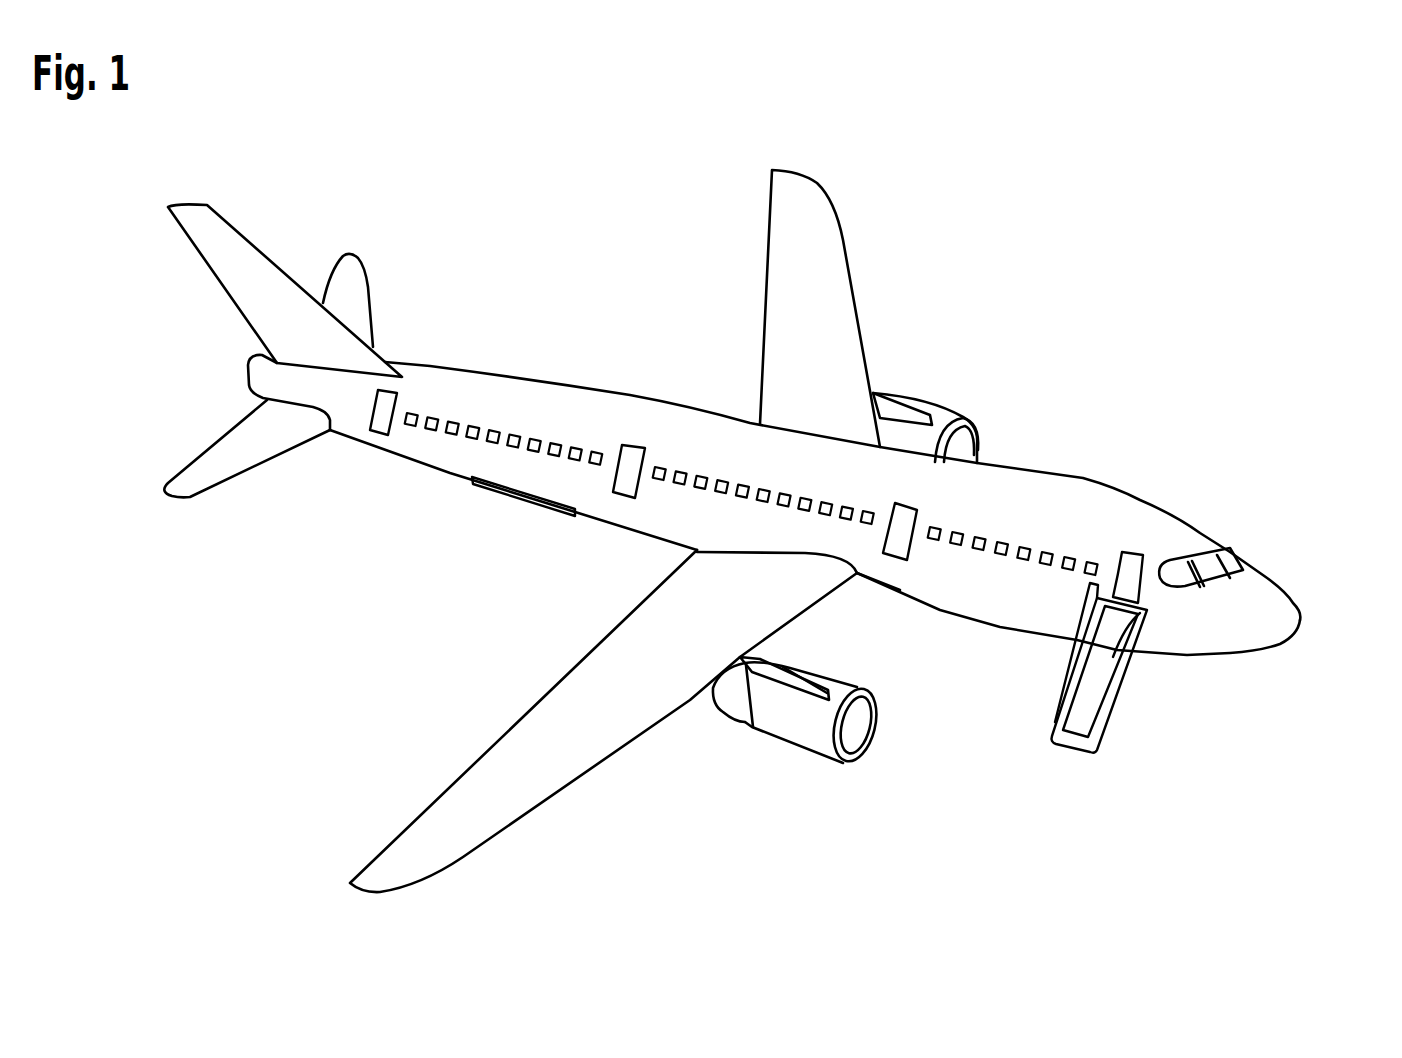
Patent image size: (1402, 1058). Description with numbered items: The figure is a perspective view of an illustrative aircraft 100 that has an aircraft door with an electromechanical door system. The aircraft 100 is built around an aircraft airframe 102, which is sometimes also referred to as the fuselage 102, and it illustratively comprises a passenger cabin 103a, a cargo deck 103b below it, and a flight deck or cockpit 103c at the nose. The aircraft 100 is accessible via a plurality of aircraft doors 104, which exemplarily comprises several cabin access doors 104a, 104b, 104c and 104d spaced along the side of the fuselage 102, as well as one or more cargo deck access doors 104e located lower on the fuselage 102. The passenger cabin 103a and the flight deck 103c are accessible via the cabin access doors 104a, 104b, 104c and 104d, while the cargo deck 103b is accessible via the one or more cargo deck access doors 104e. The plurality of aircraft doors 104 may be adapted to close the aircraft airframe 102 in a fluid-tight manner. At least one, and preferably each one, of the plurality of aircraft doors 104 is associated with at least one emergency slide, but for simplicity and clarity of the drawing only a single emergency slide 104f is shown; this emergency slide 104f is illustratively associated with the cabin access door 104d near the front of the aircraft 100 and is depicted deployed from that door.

The aircraft 100 is at (1160, 357).
The aircraft airframe 102 is at (537, 410).
The passenger cabin 103a is at (993, 560).
The cargo deck 103b is at (873, 577).
The flight deck 103c is at (1247, 545).
The plurality of aircraft doors 104 is at (1157, 602).
The cabin access door 104a is at (397, 402).
The cabin access door 104b is at (630, 462).
The cabin access door 104c is at (903, 517).
The cabin access door 104d is at (1132, 567).
The cargo deck access door 104e is at (497, 513).
The emergency slide 104f is at (1072, 743).